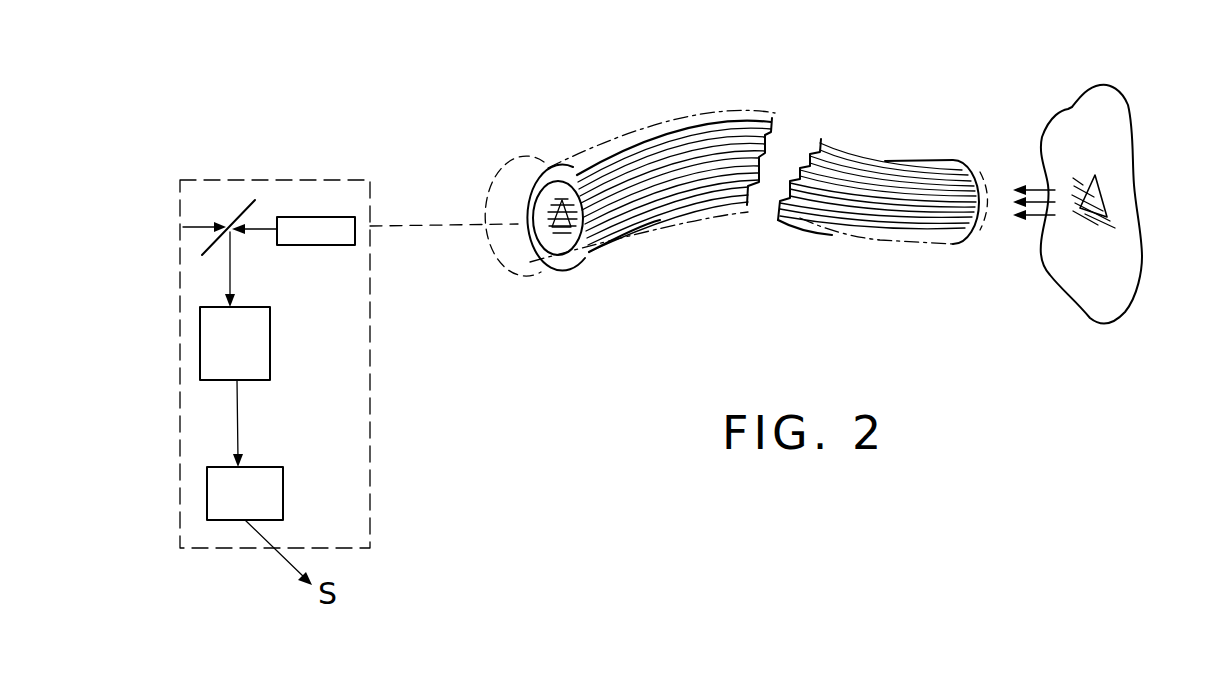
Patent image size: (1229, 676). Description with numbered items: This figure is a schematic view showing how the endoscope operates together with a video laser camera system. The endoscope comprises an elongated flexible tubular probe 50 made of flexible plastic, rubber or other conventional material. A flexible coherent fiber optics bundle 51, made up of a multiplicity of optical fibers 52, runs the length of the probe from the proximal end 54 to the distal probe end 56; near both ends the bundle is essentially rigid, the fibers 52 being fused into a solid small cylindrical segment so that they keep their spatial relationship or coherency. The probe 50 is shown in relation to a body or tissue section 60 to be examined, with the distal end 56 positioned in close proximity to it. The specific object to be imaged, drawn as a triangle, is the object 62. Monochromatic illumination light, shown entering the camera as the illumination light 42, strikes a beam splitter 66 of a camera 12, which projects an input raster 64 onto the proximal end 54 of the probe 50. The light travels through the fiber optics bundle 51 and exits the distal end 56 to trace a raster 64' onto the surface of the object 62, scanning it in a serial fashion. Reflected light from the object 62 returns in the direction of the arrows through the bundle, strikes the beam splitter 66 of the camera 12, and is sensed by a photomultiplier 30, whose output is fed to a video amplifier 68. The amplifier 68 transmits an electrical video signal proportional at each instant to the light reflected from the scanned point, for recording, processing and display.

The camera 12 is at (322, 178).
The beam splitter 66 is at (250, 198).
The input light beam 42 is at (204, 217).
The photomultiplier 30 is at (270, 356).
The video amplifier 68 is at (283, 500).
The elongated flexible tubular probe 50 is at (762, 86).
The flexible coherent fiber optics bundle 51 is at (623, 155).
The optical fibers 52 is at (648, 207).
The proximal end 54 is at (547, 205).
The input raster 64 is at (574, 258).
The distal probe end 56 is at (983, 162).
The body or tissue section 60 is at (1113, 288).
The object 62 is at (1108, 204).
The raster 64' is at (1131, 176).